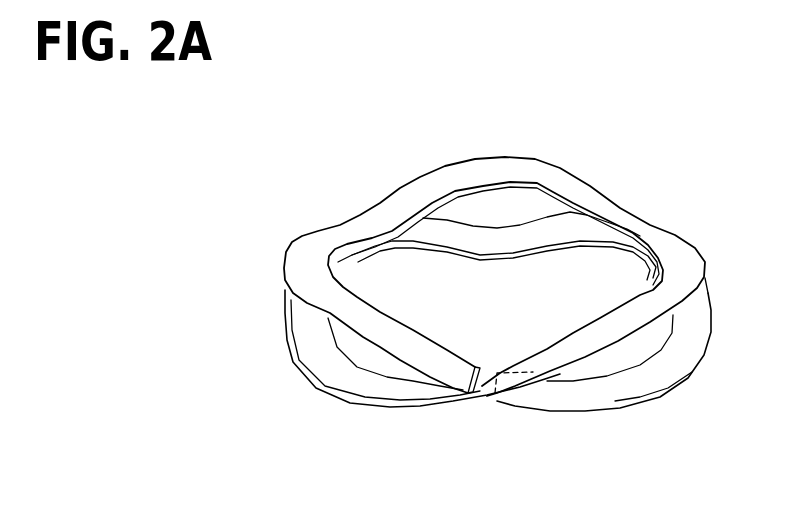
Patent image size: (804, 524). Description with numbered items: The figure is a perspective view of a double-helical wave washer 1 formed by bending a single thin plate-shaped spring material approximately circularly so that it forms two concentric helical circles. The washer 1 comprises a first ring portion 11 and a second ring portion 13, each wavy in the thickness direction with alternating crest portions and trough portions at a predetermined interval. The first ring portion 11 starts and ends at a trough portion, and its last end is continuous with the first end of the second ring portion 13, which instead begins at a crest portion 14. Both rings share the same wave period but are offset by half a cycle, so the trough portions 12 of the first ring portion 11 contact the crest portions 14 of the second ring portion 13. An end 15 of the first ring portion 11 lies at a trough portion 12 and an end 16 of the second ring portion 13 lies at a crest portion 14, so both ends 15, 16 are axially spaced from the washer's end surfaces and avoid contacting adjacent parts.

The double-helical wave washer 1 is at (641, 152).
The first ring portion 11 is at (498, 182).
The trough portions 12 is at (507, 305).
The second ring portion 13 is at (531, 169).
The crest portions 14 is at (504, 275).
The end of the first ring portion 15 is at (484, 430).
The end of the second ring portion 16 is at (526, 425).